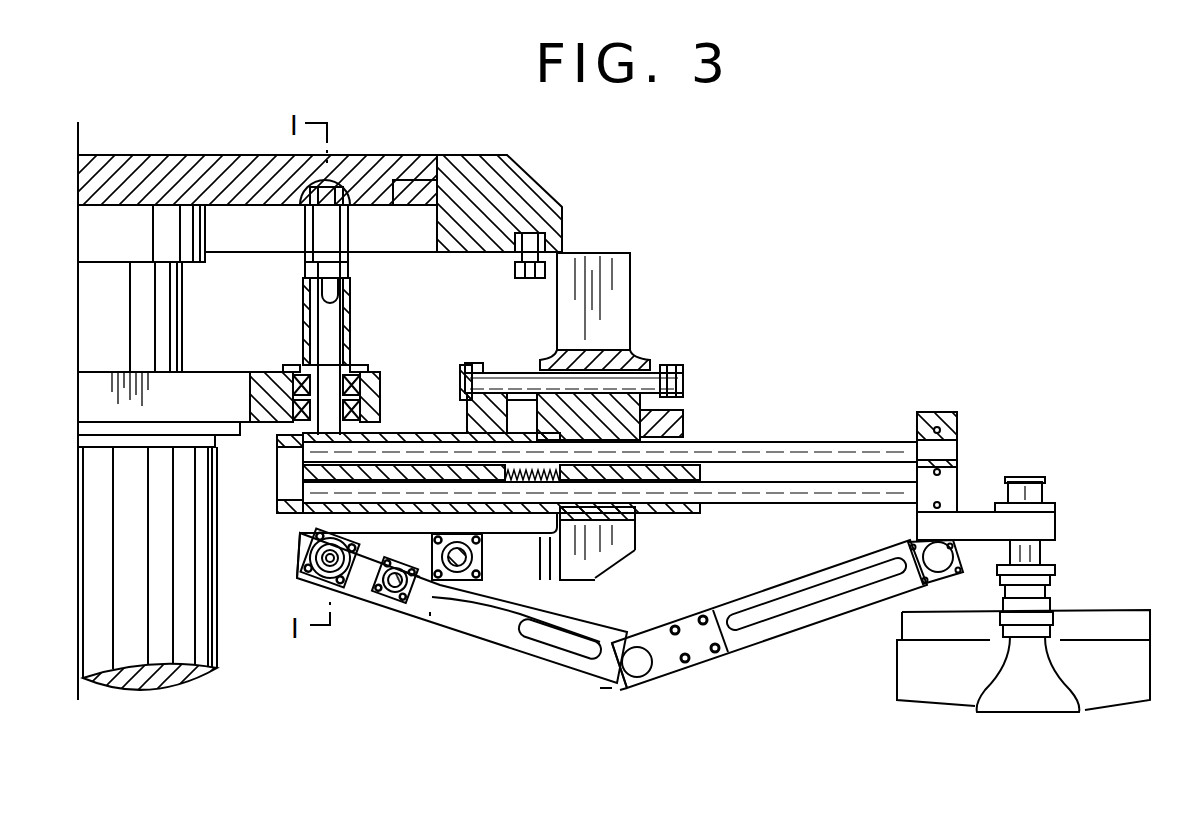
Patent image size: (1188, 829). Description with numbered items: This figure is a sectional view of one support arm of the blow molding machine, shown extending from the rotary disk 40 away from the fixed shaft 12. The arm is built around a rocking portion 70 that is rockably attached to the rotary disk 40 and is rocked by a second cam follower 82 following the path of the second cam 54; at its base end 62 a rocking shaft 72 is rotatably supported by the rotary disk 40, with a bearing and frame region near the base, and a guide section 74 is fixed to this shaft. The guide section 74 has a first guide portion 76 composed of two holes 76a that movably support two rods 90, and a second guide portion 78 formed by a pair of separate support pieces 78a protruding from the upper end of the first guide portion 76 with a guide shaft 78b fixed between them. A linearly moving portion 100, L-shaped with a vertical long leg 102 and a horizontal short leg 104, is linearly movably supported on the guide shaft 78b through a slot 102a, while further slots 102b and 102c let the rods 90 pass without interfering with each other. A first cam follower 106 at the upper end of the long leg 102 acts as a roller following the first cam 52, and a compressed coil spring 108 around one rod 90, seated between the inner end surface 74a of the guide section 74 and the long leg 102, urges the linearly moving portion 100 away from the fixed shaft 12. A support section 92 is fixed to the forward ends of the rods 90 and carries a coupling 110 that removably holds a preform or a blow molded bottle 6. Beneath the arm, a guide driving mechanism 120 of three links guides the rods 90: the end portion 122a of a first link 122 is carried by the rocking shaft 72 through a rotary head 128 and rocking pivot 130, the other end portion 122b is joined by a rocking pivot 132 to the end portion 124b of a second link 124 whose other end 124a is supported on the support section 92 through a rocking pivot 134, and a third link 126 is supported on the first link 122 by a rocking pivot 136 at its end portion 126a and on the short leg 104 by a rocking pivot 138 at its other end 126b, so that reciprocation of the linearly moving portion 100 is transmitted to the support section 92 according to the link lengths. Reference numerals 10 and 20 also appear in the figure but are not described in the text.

The blow molded bottle 6 is at (1047, 700).
The frame 10 is at (380, 154).
The fixed shaft 12 is at (182, 282).
The rotary cylinder 20 is at (188, 655).
The rotary disk 40 is at (237, 372).
The first cam 52 is at (527, 232).
The second cam 54 is at (350, 172).
The base end 62 is at (362, 350).
The rocking portion 70 is at (437, 309).
The rocking shaft 72 is at (352, 292).
The guide section 74 is at (276, 476).
The inner end surface 74a is at (460, 384).
The first guide portion 76 is at (708, 476).
The holes 76a is at (690, 442).
The second guide portion 78 is at (688, 383).
The support pieces 78a is at (472, 363).
The guide shaft 78b is at (515, 372).
The second cam follower 82 is at (303, 185).
The rods 90 is at (833, 490).
The support section 92 is at (950, 480).
The linearly moving portion 100 is at (608, 268).
The long leg 102 is at (631, 265).
The slot 102a is at (622, 362).
The slot 102b is at (684, 414).
The slot 102c is at (606, 558).
The short leg 104 is at (615, 578).
The first cam follower 106 is at (546, 262).
The compressed coil spring 108 is at (527, 442).
The coupling 110 is at (1063, 558).
The guide driving mechanism 120 is at (600, 688).
The first link 122 is at (456, 620).
The end portion 122a is at (303, 556).
The other end portion 122b is at (655, 683).
The second link 124 is at (828, 623).
The other end 124a is at (962, 558).
The end portion 124b is at (612, 688).
The third link 126 is at (418, 557).
The end portion 126a is at (392, 600).
The other end 126b is at (483, 558).
The rotary head 128 is at (300, 540).
The rocking pivot 130 is at (317, 587).
The rocking pivot 132 is at (621, 665).
The rocking pivot 134 is at (925, 548).
The rocking pivot 136 is at (430, 615).
The rocking pivot 138 is at (484, 568).